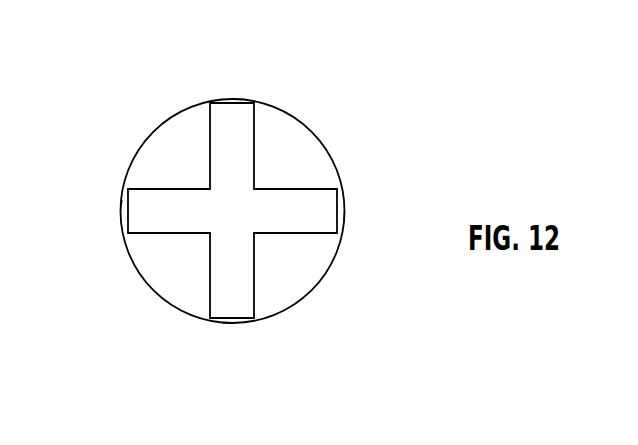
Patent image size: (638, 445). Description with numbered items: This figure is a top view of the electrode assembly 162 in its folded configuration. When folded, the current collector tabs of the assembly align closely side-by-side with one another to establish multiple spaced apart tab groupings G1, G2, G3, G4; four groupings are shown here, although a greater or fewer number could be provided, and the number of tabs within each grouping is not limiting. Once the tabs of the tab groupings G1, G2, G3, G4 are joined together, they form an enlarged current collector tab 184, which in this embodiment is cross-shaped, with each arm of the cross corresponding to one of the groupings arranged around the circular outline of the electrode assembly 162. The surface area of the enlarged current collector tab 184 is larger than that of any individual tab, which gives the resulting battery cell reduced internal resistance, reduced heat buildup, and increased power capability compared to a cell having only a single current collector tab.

The electrode assembly 162 is at (303, 158).
The enlarged current collector tab 184 is at (222, 160).
The tab grouping G1 is at (110, 217).
The tab grouping G2 is at (232, 88).
The tab grouping G3 is at (352, 206).
The tab grouping G4 is at (230, 334).